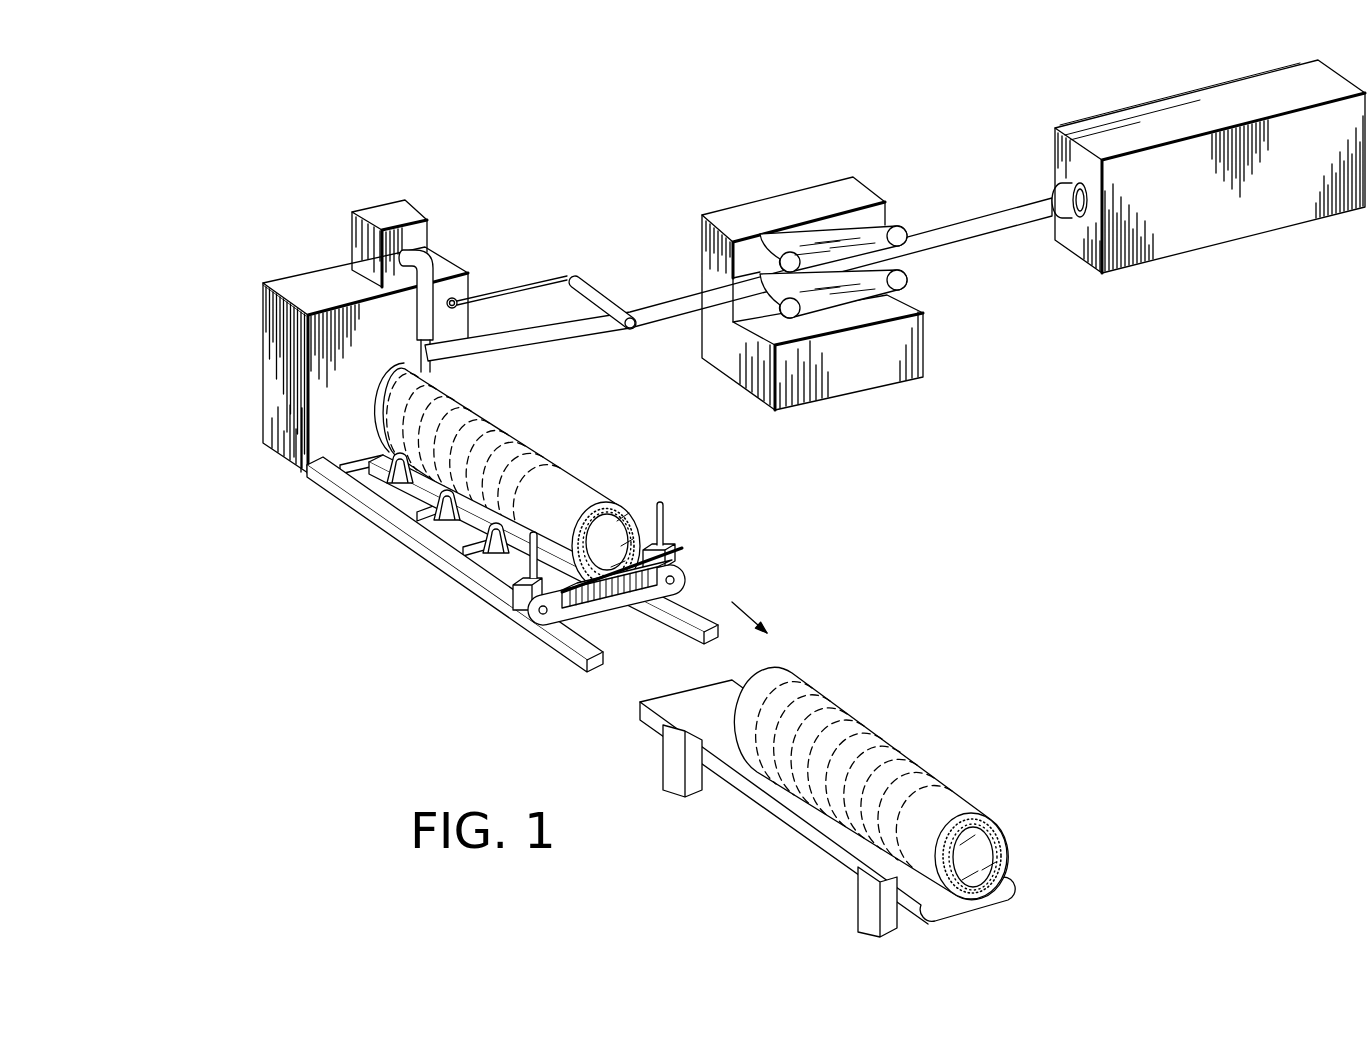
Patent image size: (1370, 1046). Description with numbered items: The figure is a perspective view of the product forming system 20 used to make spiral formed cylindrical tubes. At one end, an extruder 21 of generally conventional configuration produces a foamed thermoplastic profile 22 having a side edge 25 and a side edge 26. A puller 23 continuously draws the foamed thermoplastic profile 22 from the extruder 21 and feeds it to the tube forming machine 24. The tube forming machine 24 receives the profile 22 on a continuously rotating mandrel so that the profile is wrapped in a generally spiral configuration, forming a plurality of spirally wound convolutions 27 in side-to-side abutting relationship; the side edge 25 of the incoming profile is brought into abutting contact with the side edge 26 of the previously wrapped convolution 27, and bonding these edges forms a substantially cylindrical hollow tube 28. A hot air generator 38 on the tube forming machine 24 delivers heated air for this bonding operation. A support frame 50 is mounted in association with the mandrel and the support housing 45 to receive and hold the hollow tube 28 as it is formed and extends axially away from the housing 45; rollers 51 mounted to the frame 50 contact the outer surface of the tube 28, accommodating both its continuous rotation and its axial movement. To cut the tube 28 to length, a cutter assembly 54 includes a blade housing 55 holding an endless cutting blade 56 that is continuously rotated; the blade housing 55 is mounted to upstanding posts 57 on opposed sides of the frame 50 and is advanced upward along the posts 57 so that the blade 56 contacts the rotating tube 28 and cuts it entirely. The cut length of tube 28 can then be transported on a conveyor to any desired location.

The product forming system 20 is at (668, 167).
The extruder 21 is at (1240, 230).
The foamed thermoplastic profile 22 is at (1013, 237).
The puller 23 is at (873, 370).
The tube forming machine 24 is at (271, 445).
The side edge 25 is at (960, 245).
The side edge 26 is at (953, 223).
The spirally wound convolutions 27 is at (510, 437).
The hollow cylindrical tube 28 is at (702, 631).
The hot air generator 38 is at (393, 208).
The support housing 45 is at (288, 357).
The support frame 50 is at (468, 563).
The rollers 51 is at (487, 530).
The cutter assembly 54 is at (620, 620).
The blade housing 55 is at (682, 558).
The endless cutting blade 56 is at (677, 548).
The upstanding posts 57 is at (663, 515).